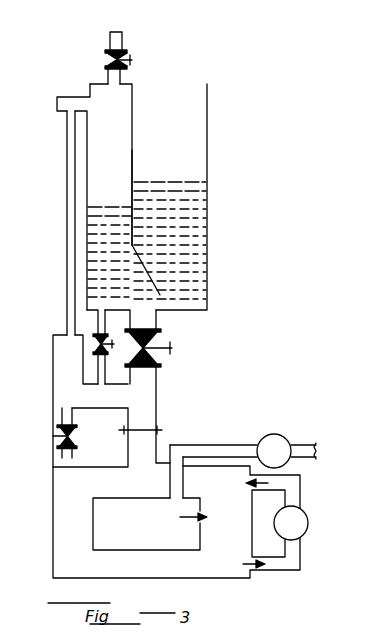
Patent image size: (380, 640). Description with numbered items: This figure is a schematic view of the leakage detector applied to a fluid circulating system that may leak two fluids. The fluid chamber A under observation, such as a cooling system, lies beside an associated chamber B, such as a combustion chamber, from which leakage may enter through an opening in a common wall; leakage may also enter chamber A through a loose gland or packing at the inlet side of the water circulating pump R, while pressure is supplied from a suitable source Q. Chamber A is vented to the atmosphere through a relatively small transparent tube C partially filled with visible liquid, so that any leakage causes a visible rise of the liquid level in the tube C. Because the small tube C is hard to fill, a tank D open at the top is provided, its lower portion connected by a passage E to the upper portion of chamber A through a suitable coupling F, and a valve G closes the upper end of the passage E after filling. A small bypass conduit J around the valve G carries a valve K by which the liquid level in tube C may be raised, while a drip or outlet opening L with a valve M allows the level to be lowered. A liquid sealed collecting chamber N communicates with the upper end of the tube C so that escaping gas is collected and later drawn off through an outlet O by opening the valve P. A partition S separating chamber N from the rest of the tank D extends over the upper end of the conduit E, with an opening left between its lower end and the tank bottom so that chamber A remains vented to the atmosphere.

The fluid chamber A is at (50, 503).
The associated chamber B is at (93, 533).
The transparent tube C is at (66, 190).
The tank D is at (210, 108).
The passage E is at (147, 318).
The coupling F is at (160, 430).
The valve G is at (157, 355).
The bypass conduit J is at (100, 323).
The valve K is at (93, 347).
The drip or outlet opening L is at (62, 449).
The valve M is at (60, 433).
The liquid sealed chamber N is at (98, 90).
The outlet O is at (122, 37).
The valve P is at (132, 58).
The source of pressure Q is at (274, 434).
The water circulating pump R is at (308, 522).
The partition S is at (133, 163).